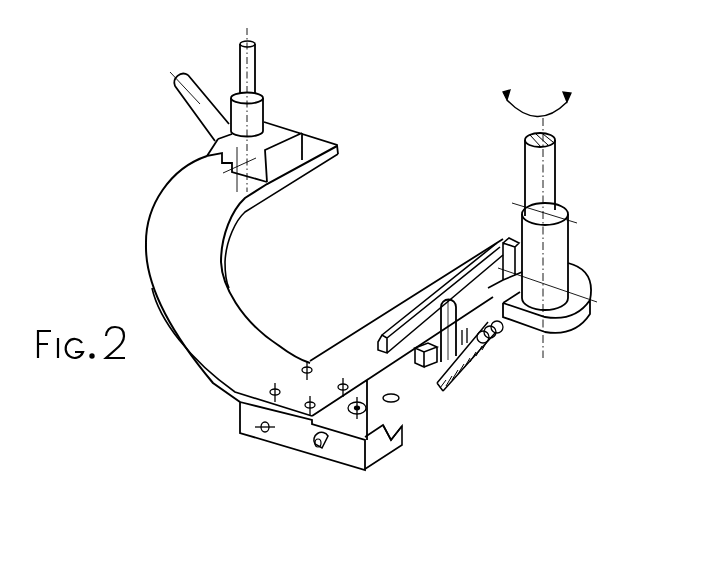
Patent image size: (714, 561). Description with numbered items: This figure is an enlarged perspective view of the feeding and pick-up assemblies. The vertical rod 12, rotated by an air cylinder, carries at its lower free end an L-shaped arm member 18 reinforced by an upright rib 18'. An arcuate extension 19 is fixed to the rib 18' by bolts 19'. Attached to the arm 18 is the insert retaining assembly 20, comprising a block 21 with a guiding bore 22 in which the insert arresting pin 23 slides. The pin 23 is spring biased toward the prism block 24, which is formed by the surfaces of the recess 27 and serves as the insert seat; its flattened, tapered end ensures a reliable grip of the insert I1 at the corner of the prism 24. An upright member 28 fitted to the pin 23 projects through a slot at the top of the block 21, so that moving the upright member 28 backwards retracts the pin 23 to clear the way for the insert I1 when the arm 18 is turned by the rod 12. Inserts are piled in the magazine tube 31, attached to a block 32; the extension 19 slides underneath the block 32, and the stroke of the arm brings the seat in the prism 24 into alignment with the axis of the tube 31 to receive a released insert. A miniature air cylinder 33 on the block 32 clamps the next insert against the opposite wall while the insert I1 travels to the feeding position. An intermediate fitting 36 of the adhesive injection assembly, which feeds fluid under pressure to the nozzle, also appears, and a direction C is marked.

The vertical rod 12 is at (546, 168).
The L-shaped arm member 18 is at (547, 323).
The upright rib 18' is at (492, 231).
The arcuate extension 19 is at (203, 281).
The bolts 19' is at (255, 396).
The insert retaining assembly 20 is at (432, 402).
The block 21 is at (487, 357).
The guiding bore 22 is at (465, 375).
The insert arresting pin 23 is at (408, 398).
The prism block 24 is at (372, 452).
The recess 27 is at (393, 435).
The upright member 28 is at (437, 308).
The magazine tube 31 is at (252, 52).
The block 32 is at (216, 158).
The miniature air cylinder 33 is at (196, 100).
The intermediate fitting 36 is at (311, 448).
The direction C is at (467, 438).
The insert I1 is at (357, 403).